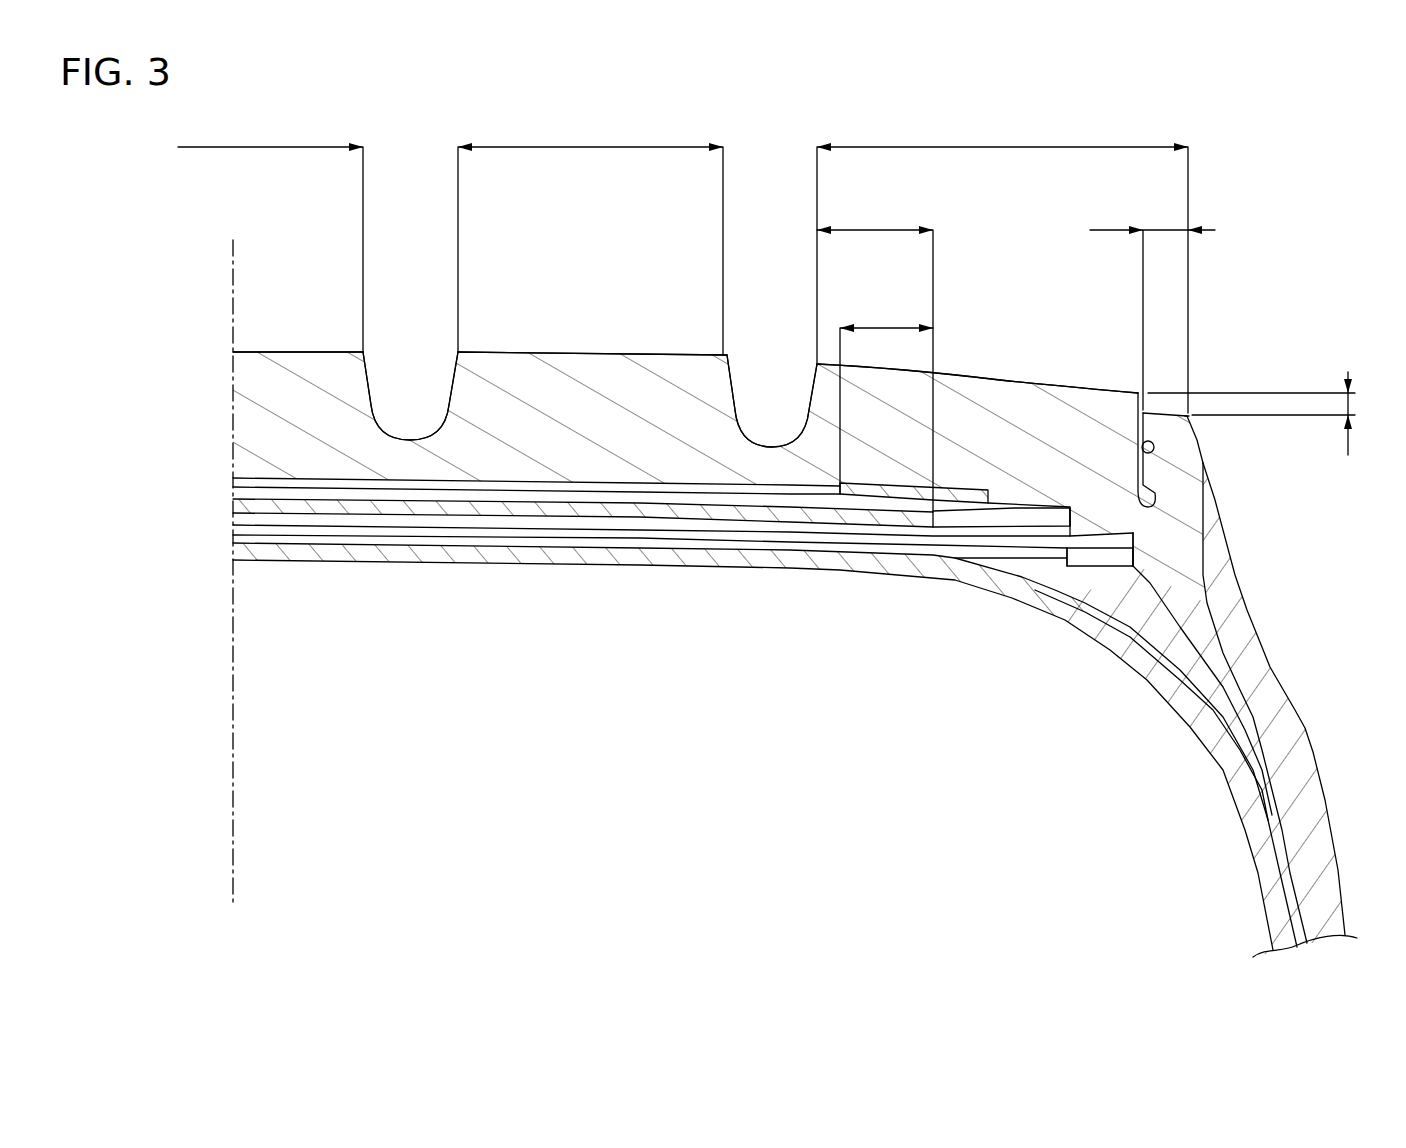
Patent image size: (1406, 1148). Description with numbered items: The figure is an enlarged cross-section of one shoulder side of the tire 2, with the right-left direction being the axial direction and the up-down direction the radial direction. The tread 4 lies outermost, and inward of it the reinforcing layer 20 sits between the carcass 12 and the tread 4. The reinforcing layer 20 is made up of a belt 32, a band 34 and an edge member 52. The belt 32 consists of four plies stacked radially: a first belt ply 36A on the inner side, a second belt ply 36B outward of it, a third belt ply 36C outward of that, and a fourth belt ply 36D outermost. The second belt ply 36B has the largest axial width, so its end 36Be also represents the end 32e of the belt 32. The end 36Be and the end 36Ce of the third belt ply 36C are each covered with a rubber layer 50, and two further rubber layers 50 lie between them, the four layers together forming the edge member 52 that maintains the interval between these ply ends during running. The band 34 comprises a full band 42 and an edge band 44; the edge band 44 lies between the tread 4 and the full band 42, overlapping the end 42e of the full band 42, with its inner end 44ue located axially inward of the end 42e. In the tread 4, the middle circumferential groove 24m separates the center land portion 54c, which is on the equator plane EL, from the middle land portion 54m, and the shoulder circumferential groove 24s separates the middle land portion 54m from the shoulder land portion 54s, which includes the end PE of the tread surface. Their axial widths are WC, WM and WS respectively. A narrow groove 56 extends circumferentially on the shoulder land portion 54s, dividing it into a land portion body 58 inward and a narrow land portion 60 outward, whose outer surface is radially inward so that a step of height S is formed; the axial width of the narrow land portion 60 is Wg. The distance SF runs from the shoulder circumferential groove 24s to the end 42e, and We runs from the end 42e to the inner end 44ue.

The tire 2 is at (1296, 319).
The tread 4 is at (576, 343).
The carcass 12 is at (738, 559).
The reinforcing layer 20 is at (505, 468).
The middle circumferential groove 24m is at (372, 388).
The shoulder circumferential groove 24s is at (733, 400).
The belt 32 is at (318, 547).
The band 34 is at (666, 489).
The first belt ply 36A is at (383, 527).
The second belt ply 36B is at (450, 517).
The third belt ply 36C is at (518, 493).
The fourth belt ply 36D is at (588, 483).
The end of the second belt ply 36Be is at (1135, 553).
The end of the third belt ply 36Ce is at (1075, 505).
The end of the belt 32e is at (1135, 553).
The full band 42 is at (678, 516).
The end of the full band 42e is at (947, 530).
The edge band 44 is at (948, 485).
The inner end of the edge band 44ue is at (840, 490).
The rubber layer 50 is at (1072, 505).
The edge member 52 is at (1107, 522).
The center land portion 54c is at (284, 350).
The middle land portion 54m is at (620, 350).
The shoulder land portion 54s is at (980, 372).
The narrow groove 56 is at (1142, 447).
The land portion body 58 is at (1040, 493).
The narrow land portion 60 is at (1170, 428).
The end of the tread surface PE is at (1195, 405).
The equator plane EL is at (236, 750).
The width of the center land portion WC is at (270, 236).
The width of the middle land portion WM is at (590, 237).
The width of the shoulder land portion WS is at (1002, 266).
The distance from shoulder groove to full band end SF is at (875, 357).
The width of the narrow land portion Wg is at (1152, 306).
The distance from full band end to edge band inner end We is at (886, 392).
The height of the step S is at (1264, 413).